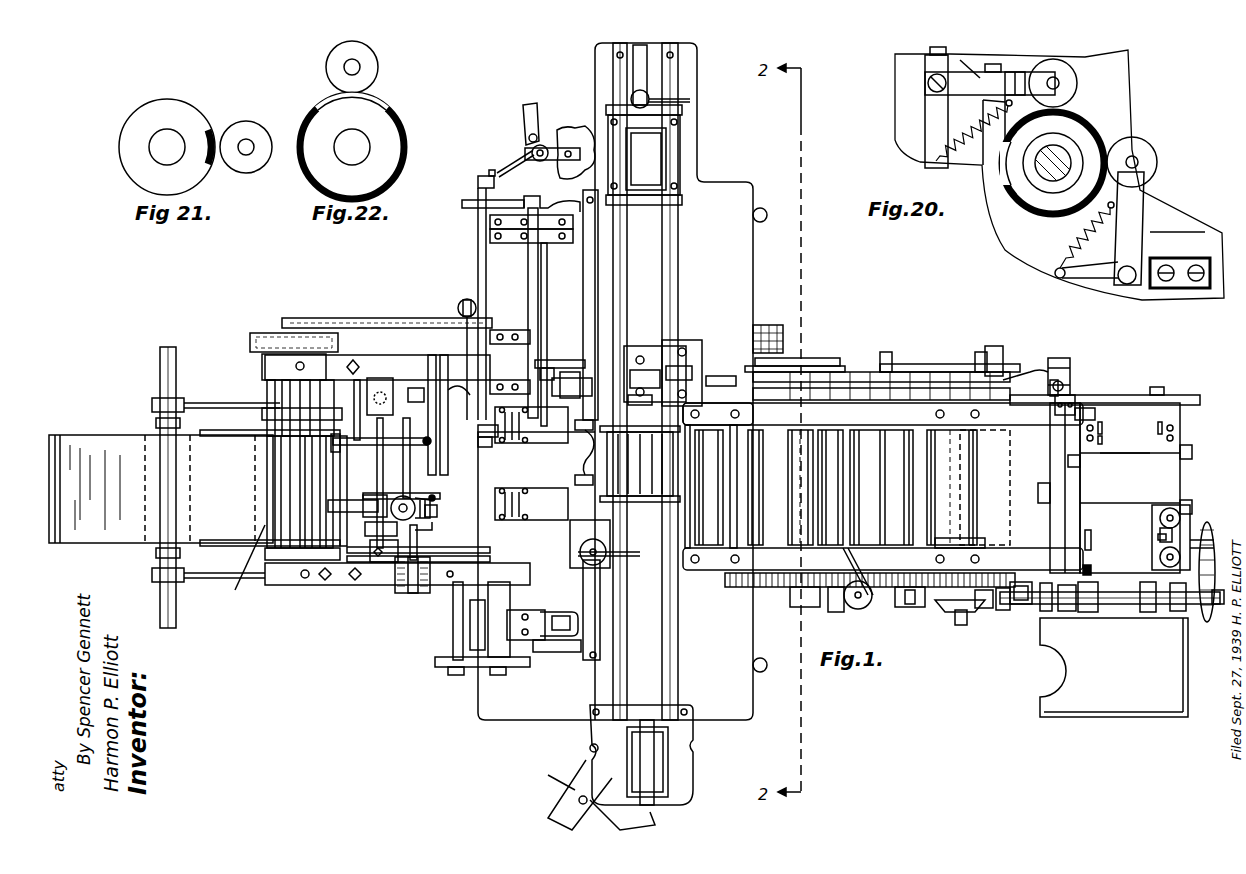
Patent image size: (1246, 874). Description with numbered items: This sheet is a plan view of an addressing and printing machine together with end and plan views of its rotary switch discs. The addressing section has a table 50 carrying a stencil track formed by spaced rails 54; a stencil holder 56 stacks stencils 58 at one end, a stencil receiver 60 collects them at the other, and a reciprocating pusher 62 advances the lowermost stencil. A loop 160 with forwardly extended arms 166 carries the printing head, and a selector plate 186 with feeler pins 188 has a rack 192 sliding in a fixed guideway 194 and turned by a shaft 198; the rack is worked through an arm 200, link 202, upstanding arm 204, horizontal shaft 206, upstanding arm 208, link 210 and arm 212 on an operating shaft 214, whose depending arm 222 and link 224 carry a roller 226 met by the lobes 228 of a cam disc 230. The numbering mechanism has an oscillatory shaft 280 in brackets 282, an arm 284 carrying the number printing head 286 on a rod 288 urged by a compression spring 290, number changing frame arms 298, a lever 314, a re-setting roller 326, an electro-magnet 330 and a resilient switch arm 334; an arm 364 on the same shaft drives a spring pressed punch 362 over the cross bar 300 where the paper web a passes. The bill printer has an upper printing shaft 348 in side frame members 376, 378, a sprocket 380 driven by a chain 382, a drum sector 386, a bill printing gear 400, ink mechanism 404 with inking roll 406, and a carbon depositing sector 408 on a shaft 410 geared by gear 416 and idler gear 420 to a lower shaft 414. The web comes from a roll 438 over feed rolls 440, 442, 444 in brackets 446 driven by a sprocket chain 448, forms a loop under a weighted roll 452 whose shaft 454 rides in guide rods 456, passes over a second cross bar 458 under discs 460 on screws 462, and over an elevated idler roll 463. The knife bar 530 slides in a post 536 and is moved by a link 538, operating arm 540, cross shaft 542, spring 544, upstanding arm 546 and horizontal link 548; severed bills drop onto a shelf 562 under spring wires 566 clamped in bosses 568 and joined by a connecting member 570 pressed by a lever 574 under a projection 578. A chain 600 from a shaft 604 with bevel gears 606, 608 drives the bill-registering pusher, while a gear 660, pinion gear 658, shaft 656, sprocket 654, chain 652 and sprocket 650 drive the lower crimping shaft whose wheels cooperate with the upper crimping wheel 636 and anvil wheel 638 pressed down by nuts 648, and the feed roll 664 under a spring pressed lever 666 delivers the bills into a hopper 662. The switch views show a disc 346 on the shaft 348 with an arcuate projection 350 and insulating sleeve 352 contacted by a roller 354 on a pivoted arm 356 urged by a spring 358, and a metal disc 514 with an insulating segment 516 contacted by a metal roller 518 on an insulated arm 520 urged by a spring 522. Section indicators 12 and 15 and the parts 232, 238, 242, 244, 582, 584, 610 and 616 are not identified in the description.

In FIG. 21, the paster roll 514 is at (156, 100).
In FIG. 20, the paster roll 514 is at (1078, 115).
In FIG. 21, the gap segment 516 is at (214, 140).
In FIG. 21, the pressure roller 518 is at (250, 166).
In FIG. 20, the pressure roller 518 is at (1152, 150).
In FIG. 21, the roller shaft 348 is at (160, 148).
In FIG. 22, the roller shaft 348 is at (362, 147).
In FIG. 20, the roller shaft 348 is at (1048, 178).
In FIG. 22, the roll 354 is at (372, 66).
In FIG. 20, the roll 354 is at (1070, 68).
In FIG. 22, the cut-away portion 350 is at (362, 103).
In FIG. 20, the cut-away portion 350 is at (1005, 165).
In FIG. 22, the ring 346 is at (388, 128).
In FIG. 20, the ring 346 is at (1085, 136).
In FIG. 22, the ring segment 352 is at (394, 176).
In FIG. 20, the ring segment 352 is at (1012, 200).
In FIG. 20, the arm 356 is at (1015, 72).
In FIG. 20, the spring 358 is at (960, 128).
In FIG. 20, the arm 520 is at (1140, 192).
In FIG. 20, the spring 522 is at (1066, 243).
In FIG. 1, the frame plate 50 is at (728, 190).
In FIG. 1, the column rails 54 is at (627, 253).
In FIG. 1, the bracket 56 is at (683, 135).
In FIG. 1, the frame 58 is at (650, 158).
In FIG. 1, the bracket 60 is at (694, 776).
In FIG. 1, the knob 62 is at (648, 92).
In FIG. 1, the section line / drum 12 is at (650, 325).
In FIG. 1, the section line 15 is at (368, 478).
In FIG. 1, the bracket 160 is at (562, 665).
In FIG. 1, the blocks 166 is at (600, 420).
In FIG. 1, the bracket 186 is at (672, 356).
In FIG. 1, the plate 188 is at (704, 366).
In FIG. 1, the slide 192 is at (691, 371).
In FIG. 1, the block 194 is at (672, 391).
In FIG. 1, the block 198 is at (572, 385).
In FIG. 1, the bar 200 is at (560, 352).
In FIG. 1, the rod 202 is at (548, 345).
In FIG. 1, the nut 204 is at (560, 371).
In FIG. 1, the rod 206 is at (540, 320).
In FIG. 1, the bar 208 is at (540, 204).
In FIG. 1, the plate 210 is at (493, 195).
In FIG. 1, the bracket 212 is at (490, 220).
In FIG. 1, the bracket 214 is at (490, 238).
In FIG. 1, the rod 222 is at (478, 178).
In FIG. 1, the link 224 is at (503, 168).
In FIG. 1, the rod 226 is at (552, 164).
In FIG. 1, the lever 228 is at (556, 130).
In FIG. 1, the cam 230 is at (573, 135).
In FIG. 1, the roller 232 is at (458, 307).
In FIG. 1, the bracket 238 is at (495, 330).
In FIG. 1, the block 242 is at (410, 390).
In FIG. 1, the rod 244 is at (446, 365).
In FIG. 1, the slide 280 is at (338, 470).
In FIG. 1, the bar 282 is at (378, 357).
In FIG. 1, the plate 284 is at (328, 503).
In FIG. 1, the bracket 286 is at (437, 511).
In FIG. 1, the wheel 288 is at (406, 496).
In FIG. 1, the pin 290 is at (436, 496).
In FIG. 1, the plate 298 is at (401, 496).
In FIG. 1, the rod 300 is at (396, 482).
In FIG. 1, the block 314 is at (365, 528).
In FIG. 1, the pawl 326 is at (432, 527).
In FIG. 1, the gear 330 is at (413, 595).
In FIG. 1, the wheel 334 is at (628, 560).
In FIG. 1, the link 362 is at (426, 446).
In FIG. 1, the rod 364 is at (363, 440).
In FIG. 1, the bar 376 is at (900, 390).
In FIG. 1, the rack 378 is at (778, 590).
In FIG. 1, the bar 380 is at (828, 358).
In FIG. 1, the block 382 is at (752, 345).
In FIG. 1, the roller 386 is at (786, 474).
In FIG. 1, the frame 400 is at (745, 590).
In FIG. 1, the link 404 is at (852, 540).
In FIG. 1, the roller 406 is at (828, 497).
In FIG. 1, the roller 408 is at (960, 458).
In FIG. 1, the block 410 is at (962, 538).
In FIG. 1, the plate 414 is at (968, 478).
In FIG. 1, the cam 416 is at (950, 626).
In FIG. 1, the block 420 is at (903, 606).
In FIG. 1, the drum 438 is at (72, 445).
In FIG. 1, the shaft 440 is at (262, 418).
In FIG. 1, the rod 442 is at (295, 420).
In FIG. 1, the block 444 is at (275, 395).
In FIG. 1, the bar 446 is at (295, 340).
In FIG. 1, the bar 448 is at (355, 318).
In FIG. 1, the block 452 is at (355, 407).
In FIG. 1, the block 454 is at (378, 400).
In FIG. 1, the block 456 is at (392, 580).
In FIG. 1, the rod 458 is at (432, 365).
In FIG. 1, the nut 460 is at (490, 437).
In FIG. 1, the nut 462 is at (501, 458).
In FIG. 1, the frame bar 463 is at (722, 430).
In FIG. 1, the plate 530 is at (1062, 500).
In FIG. 1, the bar 536 is at (1095, 394).
In FIG. 1, the roller 538 is at (1085, 353).
In FIG. 1, the arm 540 is at (1025, 370).
In FIG. 1, the post 542 is at (993, 346).
In FIG. 1, the bracket 544 is at (1072, 398).
In FIG. 1, the pin 546 is at (1050, 388).
In FIG. 1, the bar 548 is at (945, 368).
In FIG. 1, the box 562 is at (1150, 486).
In FIG. 1, the divider 566 is at (1152, 456).
In FIG. 1, the lug 568 is at (1190, 450).
In FIG. 1, the block 570 is at (1044, 482).
In FIG. 1, the block 574 is at (1082, 462).
In FIG. 1, the block 578 is at (1096, 414).
In FIG. 1, the pin 582 is at (1104, 428).
In FIG. 1, the pin 584 is at (1104, 441).
In FIG. 1, the shaft 600 is at (1122, 590).
In FIG. 1, the gear 604 is at (1022, 606).
In FIG. 1, the collar 606 is at (1003, 612).
In FIG. 1, the collar 608 is at (982, 610).
In FIG. 1, the pin 610 is at (1068, 380).
In FIG. 1, the block 616 is at (725, 376).
In FIG. 1, the pawl 636 is at (1160, 530).
In FIG. 1, the pin 638 is at (1158, 537).
In FIG. 1, the rollers 648 is at (1160, 514).
In FIG. 1, the sprocket 650 is at (1210, 530).
In FIG. 1, the bracket 652 is at (1217, 545).
In FIG. 1, the collar 654 is at (1210, 612).
In FIG. 1, the bearing 656 is at (1170, 612).
In FIG. 1, the gear 658 is at (1068, 612).
In FIG. 1, the gear 660 is at (1088, 614).
In FIG. 1, the plate 662 is at (1108, 698).
In FIG. 1, the stop 664 is at (1088, 566).
In FIG. 1, the pin 666 is at (1100, 540).
In FIG. 1, the line a is at (246, 566).